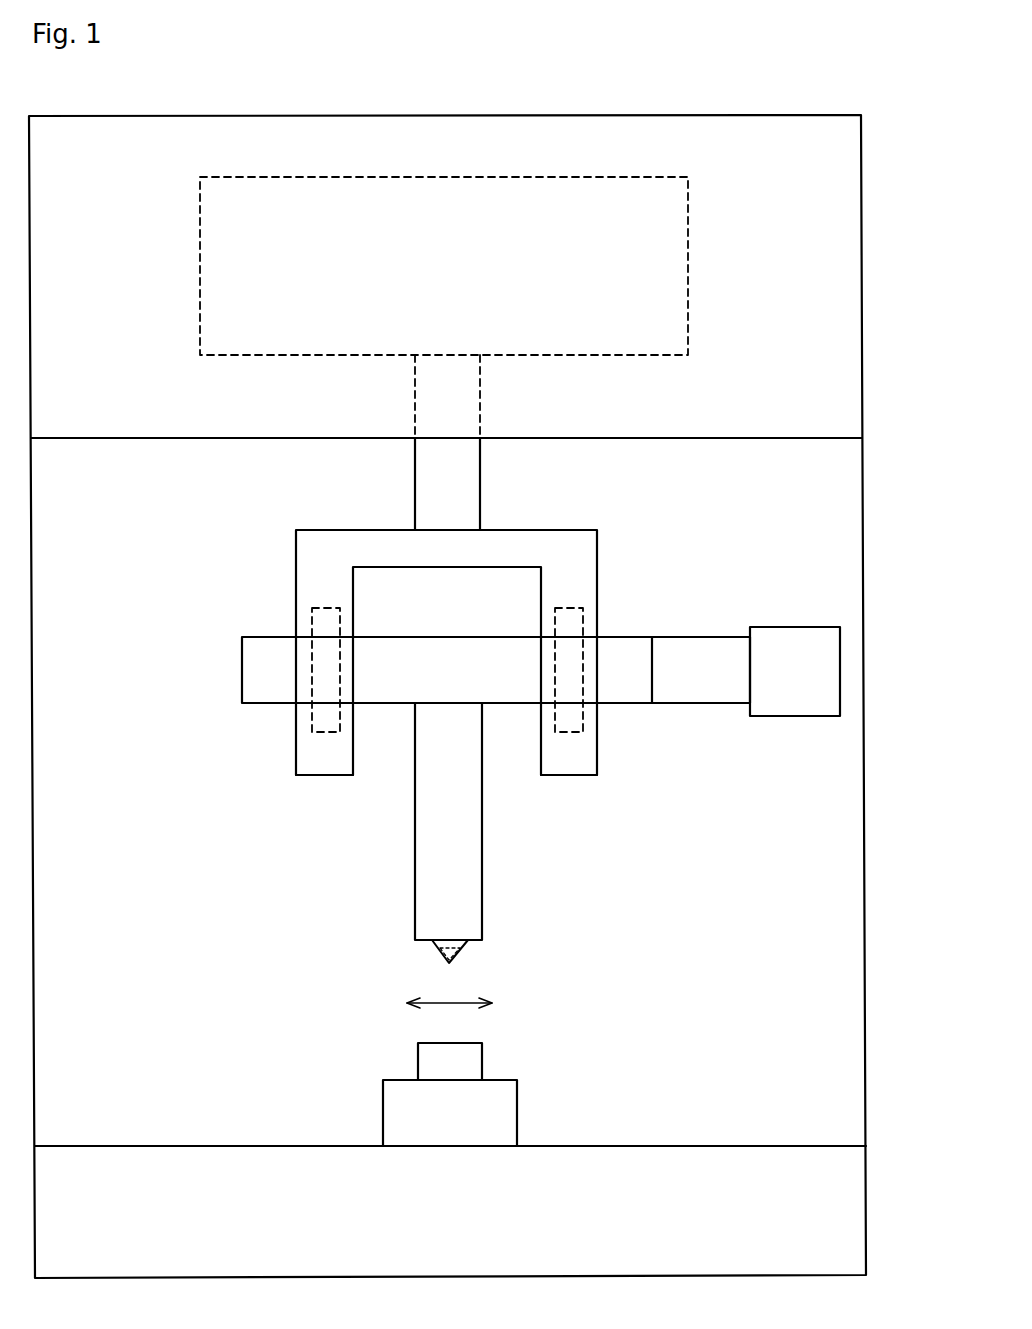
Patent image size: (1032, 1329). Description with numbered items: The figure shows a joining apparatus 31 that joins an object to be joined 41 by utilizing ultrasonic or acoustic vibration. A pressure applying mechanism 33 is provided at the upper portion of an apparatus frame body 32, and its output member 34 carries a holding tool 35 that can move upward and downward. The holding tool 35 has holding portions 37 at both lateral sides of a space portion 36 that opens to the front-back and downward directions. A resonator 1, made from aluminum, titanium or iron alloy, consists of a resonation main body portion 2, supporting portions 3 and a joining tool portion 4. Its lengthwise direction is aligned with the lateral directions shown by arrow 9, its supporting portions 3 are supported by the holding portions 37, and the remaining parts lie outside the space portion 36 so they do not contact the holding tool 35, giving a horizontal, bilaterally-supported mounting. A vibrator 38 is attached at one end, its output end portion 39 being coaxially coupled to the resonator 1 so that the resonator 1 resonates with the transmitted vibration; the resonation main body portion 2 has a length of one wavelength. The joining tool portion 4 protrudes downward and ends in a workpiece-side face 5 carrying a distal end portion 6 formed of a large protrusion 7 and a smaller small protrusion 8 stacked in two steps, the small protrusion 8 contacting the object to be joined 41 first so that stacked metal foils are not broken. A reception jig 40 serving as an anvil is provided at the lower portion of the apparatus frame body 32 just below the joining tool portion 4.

The resonator 1 is at (240, 655).
The resonation main body portion 2 is at (402, 703).
The supporting portion 3 is at (330, 735).
The joining tool portion 4 is at (466, 815).
The workpiece-side face 5 is at (473, 943).
The distal end portion 6 is at (350, 943).
The large protrusion 7 is at (432, 942).
The small protrusion 8 is at (449, 965).
The arrow 9 is at (462, 1003).
The joining apparatus 31 is at (736, 113).
The apparatus frame body 32 is at (820, 512).
The pressure applying mechanism 33 is at (530, 197).
The output member 34 is at (480, 473).
The holding tool 35 is at (333, 540).
The space portion 36 is at (387, 585).
The holding portion 37 is at (305, 752).
The vibrator 38 is at (787, 640).
The output end portion 39 is at (713, 645).
The reception jig 40 is at (517, 1110).
The object to be joined 41 is at (482, 1063).